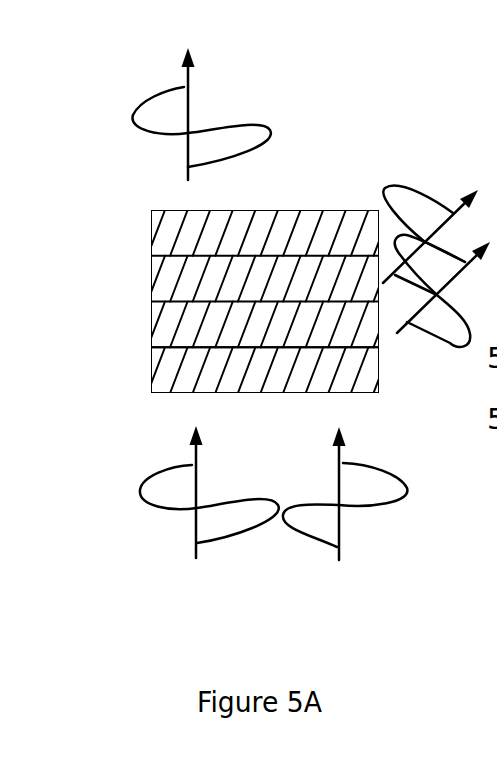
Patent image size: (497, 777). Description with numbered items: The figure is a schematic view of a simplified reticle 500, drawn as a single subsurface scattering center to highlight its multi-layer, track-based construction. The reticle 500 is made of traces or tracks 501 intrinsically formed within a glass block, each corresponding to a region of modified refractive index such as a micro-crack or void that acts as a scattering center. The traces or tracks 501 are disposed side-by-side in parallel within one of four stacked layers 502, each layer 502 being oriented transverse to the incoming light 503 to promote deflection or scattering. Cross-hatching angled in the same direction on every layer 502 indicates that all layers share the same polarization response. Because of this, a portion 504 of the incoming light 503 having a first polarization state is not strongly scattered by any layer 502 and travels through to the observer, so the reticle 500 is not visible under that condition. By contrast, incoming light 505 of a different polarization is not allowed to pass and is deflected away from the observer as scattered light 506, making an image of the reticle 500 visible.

The reticle 500 is at (85, 146).
The traces or tracks 501 is at (270, 370).
The layers 502 is at (270, 278).
The incoming light 503 is at (209, 559).
The portion of the incoming light 504 is at (211, 121).
The incoming light of a different polarization 505 is at (358, 561).
The scattered light 506 is at (411, 208).